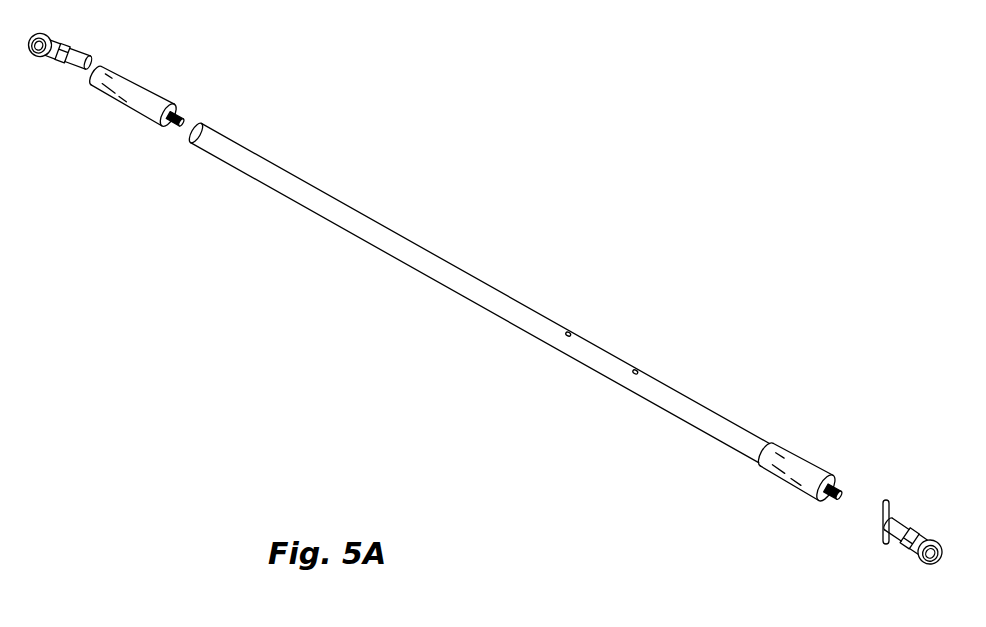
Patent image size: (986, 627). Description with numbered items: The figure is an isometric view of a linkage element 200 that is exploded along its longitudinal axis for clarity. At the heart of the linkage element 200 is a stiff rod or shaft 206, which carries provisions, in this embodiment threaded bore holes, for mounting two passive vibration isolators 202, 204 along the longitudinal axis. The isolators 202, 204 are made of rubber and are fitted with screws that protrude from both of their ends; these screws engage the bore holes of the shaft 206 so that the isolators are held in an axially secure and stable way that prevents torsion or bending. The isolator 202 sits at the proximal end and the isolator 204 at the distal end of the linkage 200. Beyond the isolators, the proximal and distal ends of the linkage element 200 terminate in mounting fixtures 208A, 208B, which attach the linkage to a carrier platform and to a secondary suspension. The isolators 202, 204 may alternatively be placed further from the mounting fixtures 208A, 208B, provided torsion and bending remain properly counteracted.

The linkage element 200 is at (636, 167).
The passive vibration isolator 202 is at (800, 455).
The passive vibration isolator 204 is at (146, 82).
The shaft 206 is at (462, 268).
The mounting fixture 208A is at (928, 566).
The mounting fixture 208B is at (44, 60).